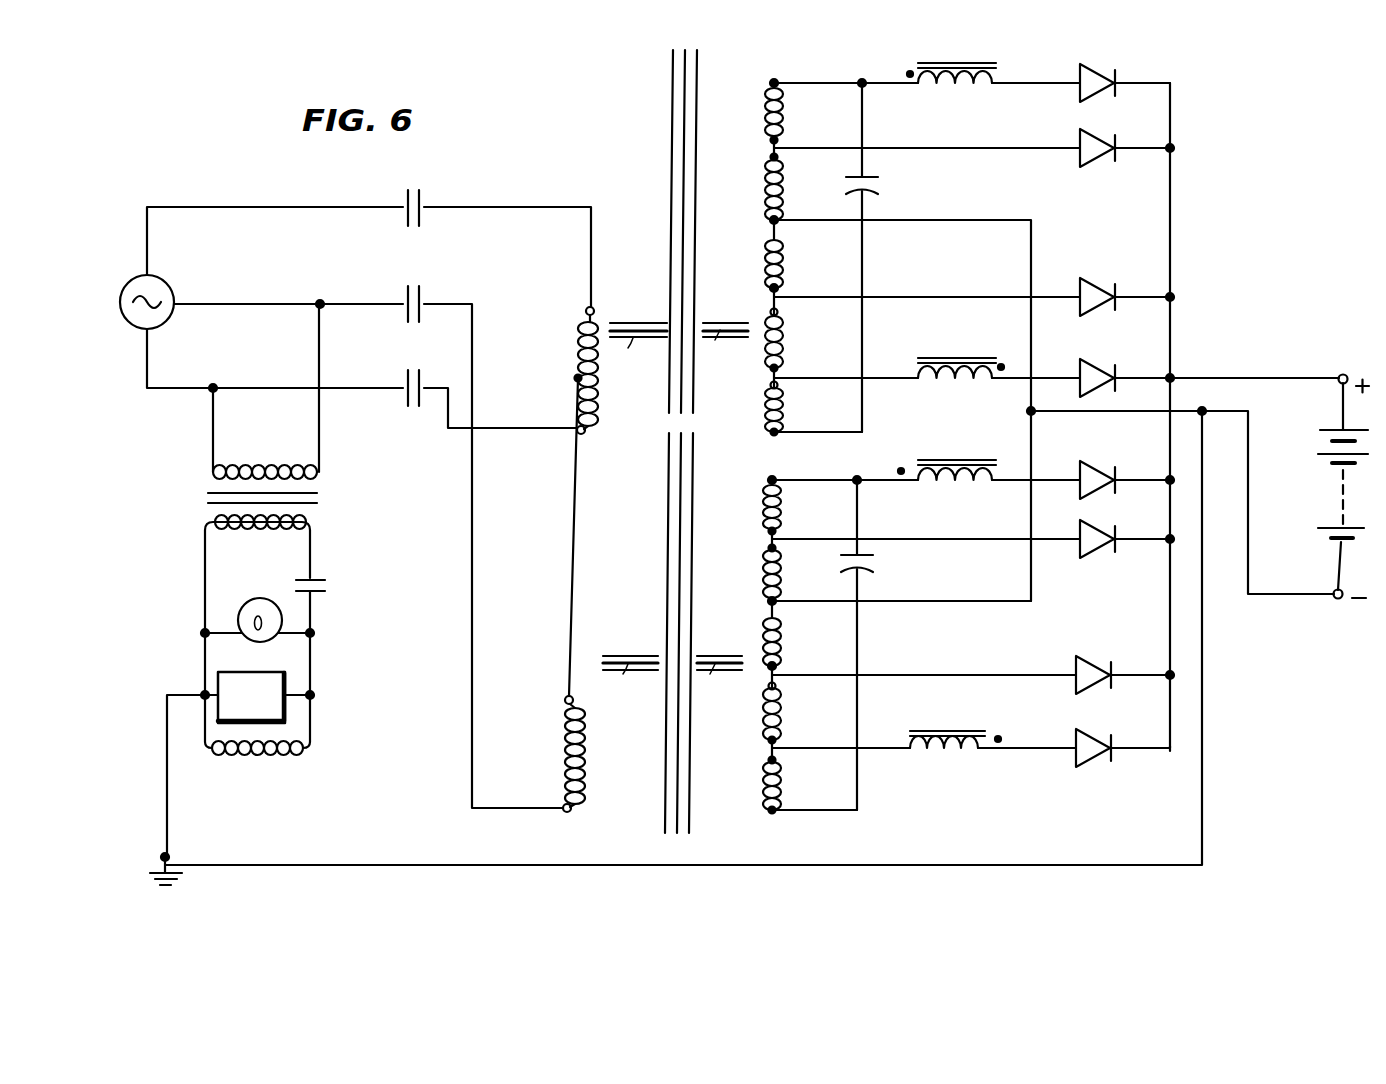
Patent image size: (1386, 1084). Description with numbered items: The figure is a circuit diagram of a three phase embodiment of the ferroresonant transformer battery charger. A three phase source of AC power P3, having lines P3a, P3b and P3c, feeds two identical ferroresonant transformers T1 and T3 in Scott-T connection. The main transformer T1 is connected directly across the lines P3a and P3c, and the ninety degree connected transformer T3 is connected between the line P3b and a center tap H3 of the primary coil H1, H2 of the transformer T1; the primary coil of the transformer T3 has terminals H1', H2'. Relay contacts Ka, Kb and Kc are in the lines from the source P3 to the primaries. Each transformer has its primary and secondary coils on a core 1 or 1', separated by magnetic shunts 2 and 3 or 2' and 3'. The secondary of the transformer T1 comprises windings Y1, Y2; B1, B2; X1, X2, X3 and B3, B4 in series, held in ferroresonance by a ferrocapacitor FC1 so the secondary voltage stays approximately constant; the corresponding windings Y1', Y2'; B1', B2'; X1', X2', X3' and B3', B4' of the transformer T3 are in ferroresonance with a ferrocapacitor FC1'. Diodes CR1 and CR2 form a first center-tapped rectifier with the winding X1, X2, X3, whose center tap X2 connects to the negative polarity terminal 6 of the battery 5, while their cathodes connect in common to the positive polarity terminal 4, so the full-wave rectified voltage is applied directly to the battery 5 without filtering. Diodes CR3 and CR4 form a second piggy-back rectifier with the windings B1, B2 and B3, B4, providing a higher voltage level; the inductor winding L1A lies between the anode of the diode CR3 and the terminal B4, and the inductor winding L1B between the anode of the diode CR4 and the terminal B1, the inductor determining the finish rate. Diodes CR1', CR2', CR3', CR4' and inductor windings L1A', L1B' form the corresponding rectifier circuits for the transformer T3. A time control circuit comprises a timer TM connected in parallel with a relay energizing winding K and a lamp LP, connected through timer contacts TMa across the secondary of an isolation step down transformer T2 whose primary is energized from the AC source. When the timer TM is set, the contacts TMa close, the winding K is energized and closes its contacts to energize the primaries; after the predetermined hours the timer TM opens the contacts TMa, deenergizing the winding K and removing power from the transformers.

The three phase source of AC power P3 is at (139, 286).
The line P3a is at (149, 229).
The line P3b is at (193, 302).
The line P3c is at (150, 356).
The relay contact Ka is at (414, 189).
The relay contact Kb is at (413, 287).
The relay contact Kc is at (413, 372).
The ferroresonant transformer T1 is at (650, 310).
The primary coil terminal H1 is at (576, 358).
The primary coil terminal H2 is at (596, 454).
The center tap H3 is at (576, 375).
The magnetic shunt 2 is at (638, 359).
The magnetic shunt 3 is at (726, 359).
The core 1 is at (722, 437).
The core 1' is at (725, 837).
The ferroresonant transformer T3 is at (640, 643).
The primary coil terminal H1' is at (556, 750).
The primary coil terminal H2' is at (549, 794).
The magnetic shunt 2' is at (621, 692).
The magnetic shunt 3' is at (725, 692).
The secondary winding end terminal B4 is at (813, 107).
The secondary winding terminal B3 is at (926, 139).
The secondary winding terminal X3 is at (795, 186).
The center tap X2 is at (898, 396).
The secondary winding terminal X1 is at (925, 288).
The secondary winding terminal B2 is at (794, 336).
The secondary winding end terminal B1 is at (845, 365).
The secondary winding terminal Y2 is at (794, 407).
The secondary winding terminal Y1 is at (817, 421).
The ferrocapacitor FC1 is at (891, 255).
The inductor winding L1A is at (971, 57).
The inductor winding L1B is at (999, 388).
The first diode CR1 is at (1127, 137).
The second diode CR2 is at (1127, 283).
The third diode CR3 is at (1125, 68).
The fourth diode CR4 is at (1209, 365).
The secondary winding end terminal B4' is at (810, 502).
The secondary winding terminal B3' is at (925, 531).
The secondary winding terminal X3' is at (795, 572).
The center tap X2' is at (897, 631).
The secondary winding terminal X1' is at (922, 666).
The secondary winding terminal B2' is at (792, 710).
The secondary winding end terminal B1' is at (840, 739).
The secondary winding terminal Y2' is at (792, 781).
The secondary winding terminal Y1' is at (813, 800).
The ferrocapacitor FC1' is at (891, 643).
The inductor winding L1A' is at (968, 490).
The inductor winding L1B' is at (993, 761).
The diode CR1' is at (1127, 530).
The diode CR2' is at (1125, 662).
The diode CR3' is at (1127, 466).
The diode CR4' is at (1123, 735).
The positive polarity terminal 4 is at (1350, 362).
The battery 5 is at (1326, 436).
The negative polarity terminal 6 is at (1336, 600).
The isolation step down transformer T2 is at (196, 510).
The timer contacts TMa is at (328, 591).
The lamp LP is at (273, 613).
The timer TM is at (275, 694).
The relay energizing winding K is at (258, 755).